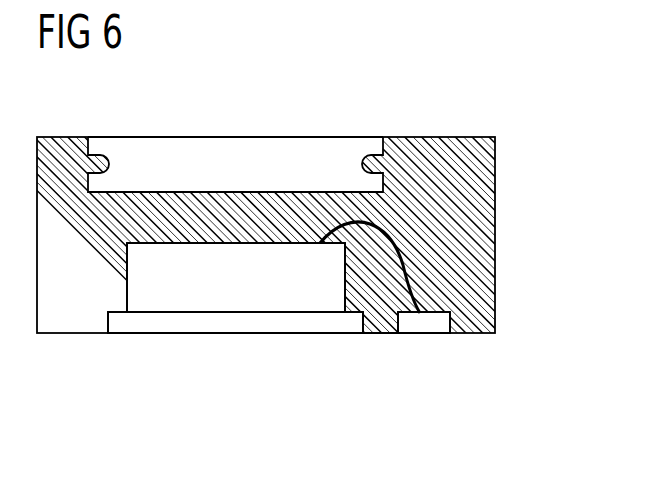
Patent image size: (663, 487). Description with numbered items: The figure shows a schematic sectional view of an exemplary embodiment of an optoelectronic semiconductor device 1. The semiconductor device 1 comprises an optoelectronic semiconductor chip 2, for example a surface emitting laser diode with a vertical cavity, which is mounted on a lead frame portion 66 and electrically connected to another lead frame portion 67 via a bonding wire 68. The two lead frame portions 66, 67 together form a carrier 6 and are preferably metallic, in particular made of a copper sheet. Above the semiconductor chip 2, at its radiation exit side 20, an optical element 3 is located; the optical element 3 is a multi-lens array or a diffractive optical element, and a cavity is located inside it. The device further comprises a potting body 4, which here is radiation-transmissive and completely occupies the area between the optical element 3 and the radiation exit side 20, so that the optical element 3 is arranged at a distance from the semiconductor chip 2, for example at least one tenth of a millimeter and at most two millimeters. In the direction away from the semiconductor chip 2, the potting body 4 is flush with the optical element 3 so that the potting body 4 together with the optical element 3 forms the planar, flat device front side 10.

The optoelectronic semiconductor device 1 is at (458, 111).
The optoelectronic semiconductor chip 2 is at (180, 297).
The optical element 3 is at (148, 136).
The potting body 4 is at (379, 334).
The carrier 6 is at (435, 395).
The device front side 10 is at (233, 137).
The radiation exit side 20 is at (232, 242).
The lead frame portion 66 is at (237, 324).
The lead frame portion 67 is at (423, 324).
The bonding wire 68 is at (393, 248).